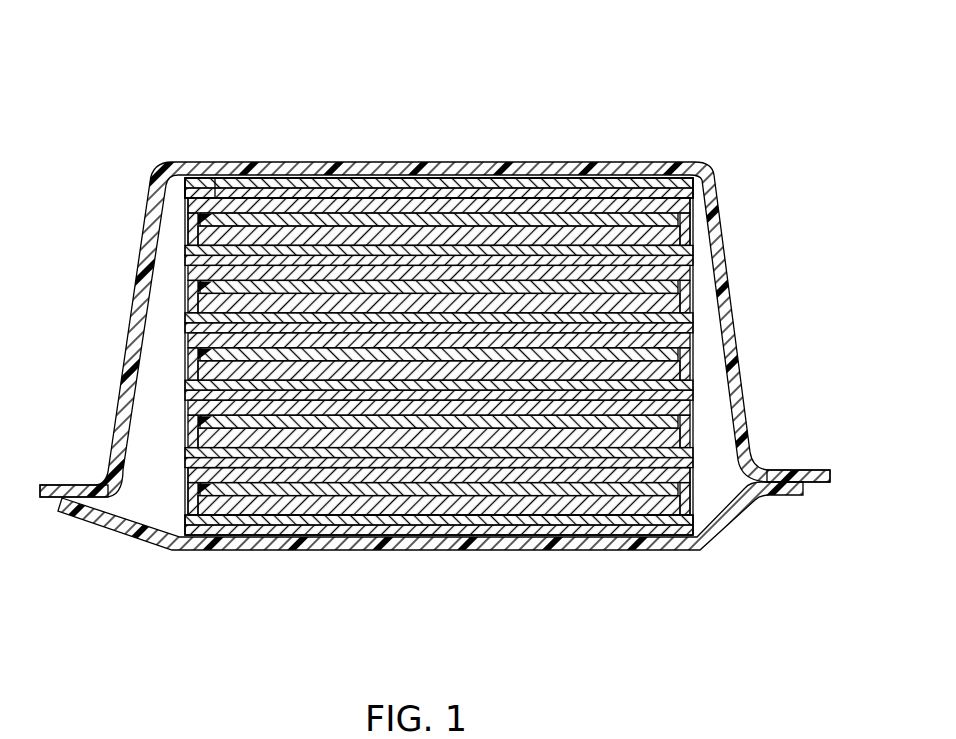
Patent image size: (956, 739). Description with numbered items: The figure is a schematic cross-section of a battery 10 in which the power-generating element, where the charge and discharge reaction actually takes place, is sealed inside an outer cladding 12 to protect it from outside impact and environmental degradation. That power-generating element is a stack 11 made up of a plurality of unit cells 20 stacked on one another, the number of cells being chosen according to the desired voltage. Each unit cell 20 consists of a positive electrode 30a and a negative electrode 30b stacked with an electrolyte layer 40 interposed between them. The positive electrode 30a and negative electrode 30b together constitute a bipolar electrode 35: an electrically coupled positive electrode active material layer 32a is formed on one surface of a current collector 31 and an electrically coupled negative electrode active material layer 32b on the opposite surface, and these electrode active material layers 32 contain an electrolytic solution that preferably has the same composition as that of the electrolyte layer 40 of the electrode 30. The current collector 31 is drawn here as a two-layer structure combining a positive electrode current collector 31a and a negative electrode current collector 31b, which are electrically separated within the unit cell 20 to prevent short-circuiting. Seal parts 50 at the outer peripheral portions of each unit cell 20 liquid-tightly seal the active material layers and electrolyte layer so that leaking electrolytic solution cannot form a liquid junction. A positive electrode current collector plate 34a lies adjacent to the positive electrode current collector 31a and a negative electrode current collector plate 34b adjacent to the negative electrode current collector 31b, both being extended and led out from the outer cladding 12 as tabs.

The battery 10 is at (102, 28).
The stack 11 is at (704, 353).
The outer cladding 12 is at (130, 308).
The unit cell 20 is at (240, 53).
The electrode 30 is at (548, 88).
The positive electrode 30a is at (423, 127).
The negative electrode 30b is at (565, 127).
The current collector 31 is at (395, 608).
The positive electrode current collector 31a is at (345, 196).
The negative electrode current collector 31b is at (540, 244).
The electrode active material layers 32 is at (535, 608).
The positive electrode active material layer 32a is at (401, 212).
The negative electrode active material layer 32b is at (478, 234).
The positive electrode current collector plate 34a is at (62, 484).
The negative electrode current collector plate 34b is at (810, 470).
The bipolar electrode 35 is at (527, 652).
The electrolyte layer 40 is at (610, 192).
The seal part 50 is at (215, 193).